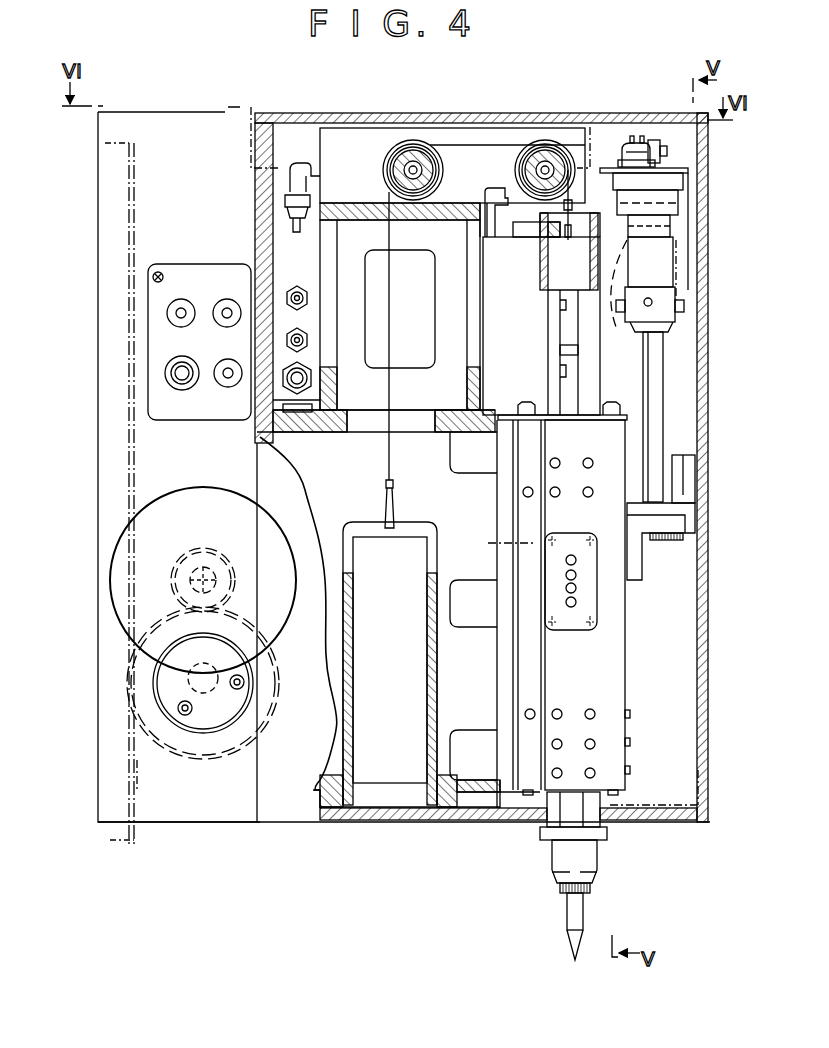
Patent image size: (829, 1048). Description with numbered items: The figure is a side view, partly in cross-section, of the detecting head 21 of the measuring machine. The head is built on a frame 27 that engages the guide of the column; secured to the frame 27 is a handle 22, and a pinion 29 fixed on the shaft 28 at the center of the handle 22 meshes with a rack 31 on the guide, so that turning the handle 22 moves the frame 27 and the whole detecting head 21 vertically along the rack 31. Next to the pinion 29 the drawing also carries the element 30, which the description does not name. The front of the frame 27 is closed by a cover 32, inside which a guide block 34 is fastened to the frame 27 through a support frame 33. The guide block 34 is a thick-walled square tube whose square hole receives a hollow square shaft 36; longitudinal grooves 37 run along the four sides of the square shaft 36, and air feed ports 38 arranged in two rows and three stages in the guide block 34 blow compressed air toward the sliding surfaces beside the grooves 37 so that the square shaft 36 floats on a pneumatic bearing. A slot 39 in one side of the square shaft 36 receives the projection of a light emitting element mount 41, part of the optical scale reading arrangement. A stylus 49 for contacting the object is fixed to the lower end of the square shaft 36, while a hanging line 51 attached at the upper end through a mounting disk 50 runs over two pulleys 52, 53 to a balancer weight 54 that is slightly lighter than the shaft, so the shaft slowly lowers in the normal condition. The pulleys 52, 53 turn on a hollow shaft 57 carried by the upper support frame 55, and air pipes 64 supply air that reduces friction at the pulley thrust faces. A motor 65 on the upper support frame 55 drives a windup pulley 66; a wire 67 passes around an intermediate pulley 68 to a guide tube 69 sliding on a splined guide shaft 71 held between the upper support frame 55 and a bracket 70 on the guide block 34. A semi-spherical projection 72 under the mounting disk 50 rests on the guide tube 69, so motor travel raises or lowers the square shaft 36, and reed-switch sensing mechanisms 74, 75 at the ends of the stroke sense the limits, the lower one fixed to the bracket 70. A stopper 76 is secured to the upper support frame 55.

The detecting head 21 is at (207, 106).
The handle 22 is at (122, 542).
The frame 27 is at (143, 175).
The shaft 28 is at (213, 577).
The pinion 29 is at (207, 550).
The gear 30 is at (192, 757).
The rack 31 is at (140, 778).
The cover 32 is at (705, 260).
The support frame 33 is at (486, 800).
The guide block 34 is at (605, 673).
The square shaft 36 is at (548, 333).
The grooves 37 is at (546, 306).
The air feed ports 38 is at (583, 497).
The slot 39 is at (562, 375).
The light emitting element mount 41 is at (598, 578).
The stylus 49 is at (572, 905).
The mounting disk 50 is at (528, 242).
The hanging line 51 is at (468, 145).
The pulley 52 is at (548, 148).
The pulley 53 is at (400, 150).
The balancer weight 54 is at (415, 552).
The upper support frame 55 is at (366, 128).
The hollow shaft 57 is at (385, 168).
The air pipes 64 is at (299, 170).
The motor 65 is at (667, 231).
The windup pulley 66 is at (630, 150).
The wire 67 is at (643, 137).
The intermediate pulley 68 is at (660, 145).
The guide tube 69 is at (674, 287).
The bracket 70 is at (690, 516).
The guide shaft 71 is at (660, 388).
The semi-spherical projection 72 is at (619, 299).
The sensing mechanism 74 is at (686, 242).
The sensing mechanism 75 is at (690, 467).
The stopper 76 is at (568, 242).